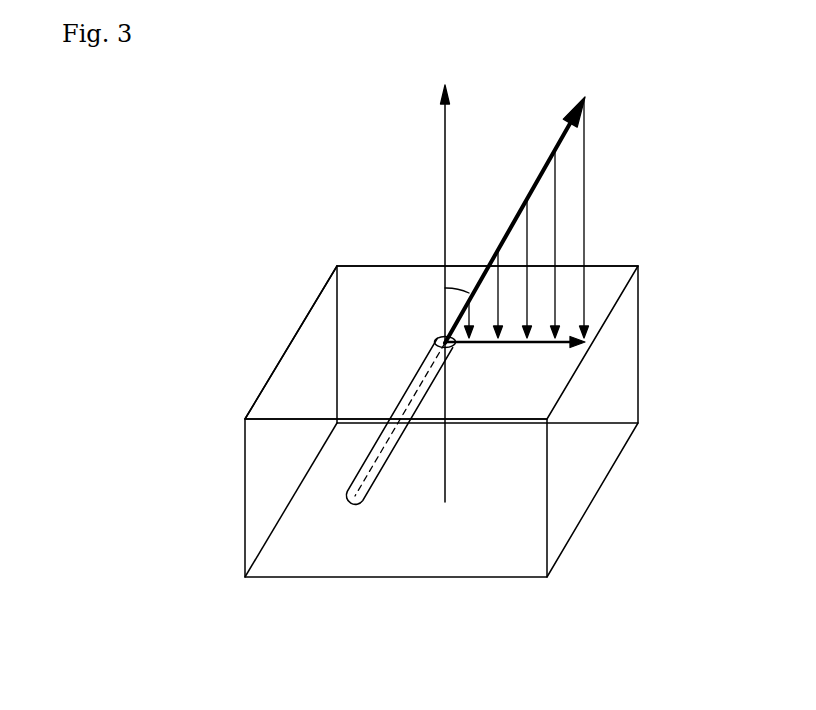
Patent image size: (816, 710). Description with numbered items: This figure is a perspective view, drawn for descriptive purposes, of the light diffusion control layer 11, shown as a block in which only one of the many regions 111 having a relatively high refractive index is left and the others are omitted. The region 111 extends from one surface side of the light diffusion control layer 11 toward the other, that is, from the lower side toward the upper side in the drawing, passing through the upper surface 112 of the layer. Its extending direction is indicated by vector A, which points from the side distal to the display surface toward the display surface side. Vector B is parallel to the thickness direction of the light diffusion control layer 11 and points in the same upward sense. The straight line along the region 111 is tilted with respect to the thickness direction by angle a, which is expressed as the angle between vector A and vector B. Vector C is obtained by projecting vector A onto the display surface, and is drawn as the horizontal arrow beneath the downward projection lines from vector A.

The light diffusion control layer 11 is at (285, 318).
The upper surface 112 is at (358, 278).
The region having a relatively high refractive index 111 is at (443, 337).
The vector A is at (560, 137).
The vector B is at (442, 173).
The vector C is at (548, 343).
The angle a is at (457, 278).